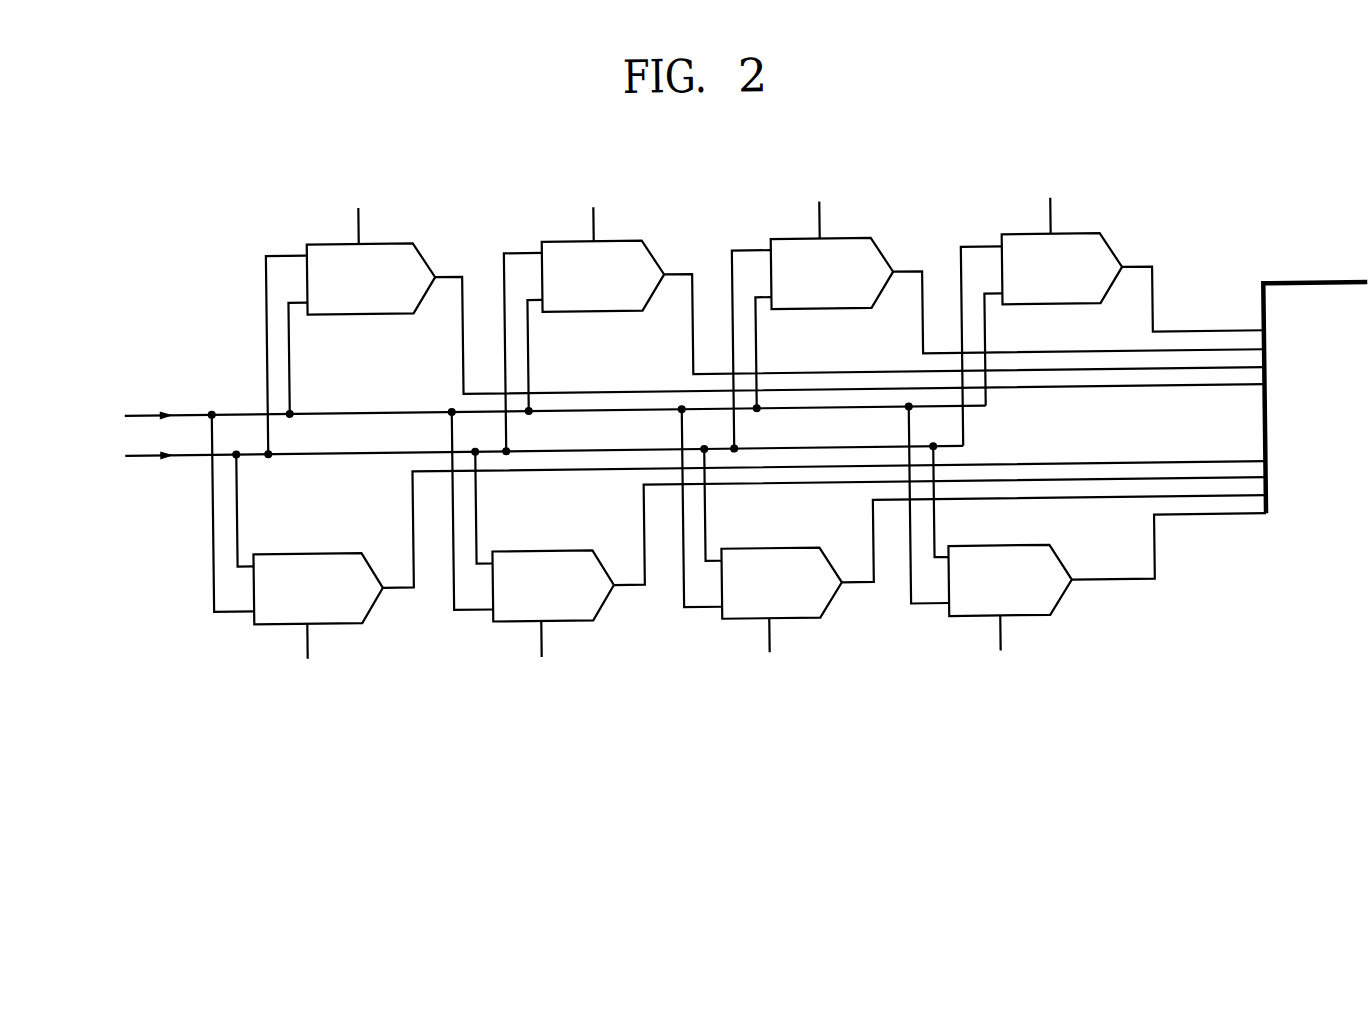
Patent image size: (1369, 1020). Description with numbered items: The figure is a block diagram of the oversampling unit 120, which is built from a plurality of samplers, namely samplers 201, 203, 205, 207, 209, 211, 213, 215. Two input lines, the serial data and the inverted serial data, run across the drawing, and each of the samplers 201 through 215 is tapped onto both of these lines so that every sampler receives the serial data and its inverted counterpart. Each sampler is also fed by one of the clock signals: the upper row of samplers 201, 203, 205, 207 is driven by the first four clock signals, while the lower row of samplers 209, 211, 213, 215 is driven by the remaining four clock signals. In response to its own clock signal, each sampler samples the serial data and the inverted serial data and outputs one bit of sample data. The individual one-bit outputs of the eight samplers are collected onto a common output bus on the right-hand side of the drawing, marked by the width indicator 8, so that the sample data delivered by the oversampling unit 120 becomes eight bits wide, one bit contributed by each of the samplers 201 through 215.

The oversampling unit 120 is at (1258, 173).
The sampler 201 is at (415, 240).
The sampler 203 is at (644, 240).
The sampler 205 is at (873, 240).
The sampler 207 is at (1102, 238).
The sampler 209 is at (360, 619).
The sampler 211 is at (591, 619).
The sampler 213 is at (818, 619).
The sampler 215 is at (1048, 619).
The 8-bit sample data bus 8 is at (1311, 302).